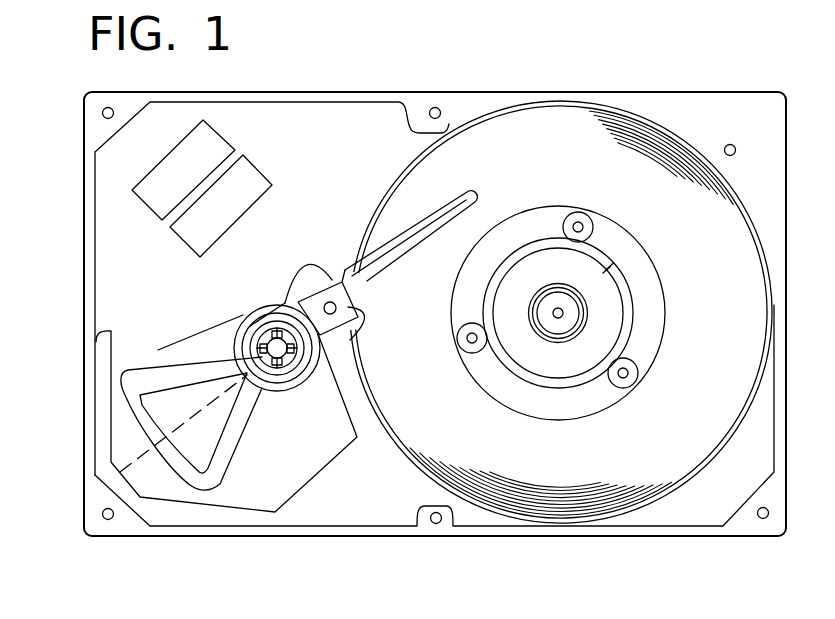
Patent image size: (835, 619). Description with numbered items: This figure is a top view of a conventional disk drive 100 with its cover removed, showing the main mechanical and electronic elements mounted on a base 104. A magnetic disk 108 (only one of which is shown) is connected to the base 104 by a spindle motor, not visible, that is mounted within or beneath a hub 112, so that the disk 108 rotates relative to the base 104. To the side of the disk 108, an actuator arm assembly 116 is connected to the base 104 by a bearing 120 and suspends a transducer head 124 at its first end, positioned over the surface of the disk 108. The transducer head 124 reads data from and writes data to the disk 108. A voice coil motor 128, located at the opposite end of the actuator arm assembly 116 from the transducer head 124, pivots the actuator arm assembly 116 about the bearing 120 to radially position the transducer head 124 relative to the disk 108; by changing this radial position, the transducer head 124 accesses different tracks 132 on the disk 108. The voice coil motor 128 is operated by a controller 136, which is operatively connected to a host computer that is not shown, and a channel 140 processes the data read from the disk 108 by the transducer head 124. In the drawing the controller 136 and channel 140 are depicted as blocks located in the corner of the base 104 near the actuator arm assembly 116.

The disk drive 100 is at (654, 79).
The base 104 is at (377, 503).
The magnetic disk 108 is at (573, 487).
The hub 112 is at (567, 305).
The actuator arm assembly 116 is at (416, 219).
The bearing 120 is at (272, 343).
The transducer head 124 is at (472, 193).
The voice coil motor 128 is at (130, 393).
The tracks 132 is at (545, 508).
The controller 136 is at (151, 203).
The channel 140 is at (187, 232).